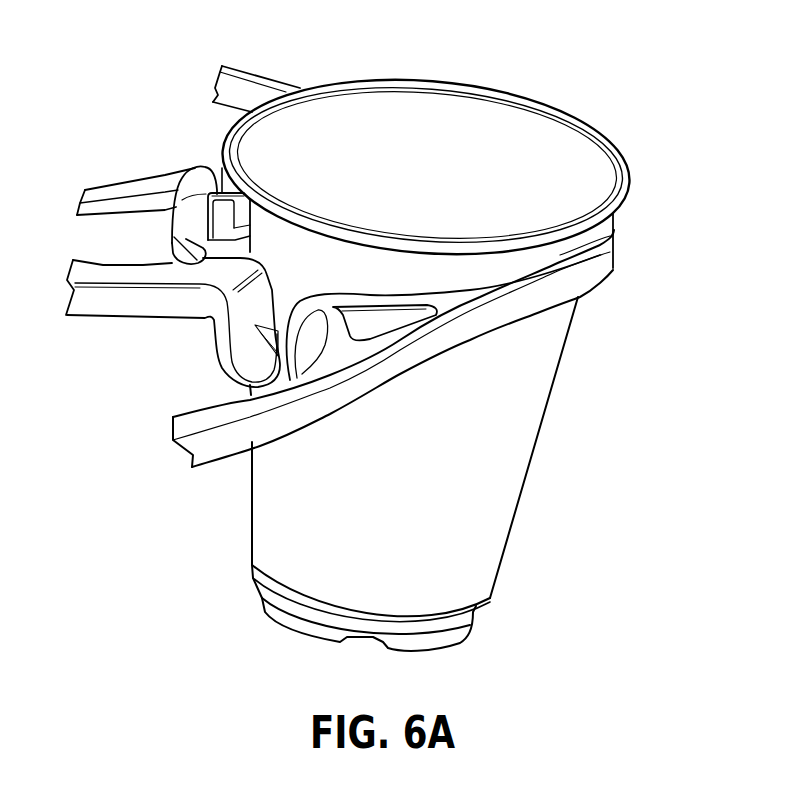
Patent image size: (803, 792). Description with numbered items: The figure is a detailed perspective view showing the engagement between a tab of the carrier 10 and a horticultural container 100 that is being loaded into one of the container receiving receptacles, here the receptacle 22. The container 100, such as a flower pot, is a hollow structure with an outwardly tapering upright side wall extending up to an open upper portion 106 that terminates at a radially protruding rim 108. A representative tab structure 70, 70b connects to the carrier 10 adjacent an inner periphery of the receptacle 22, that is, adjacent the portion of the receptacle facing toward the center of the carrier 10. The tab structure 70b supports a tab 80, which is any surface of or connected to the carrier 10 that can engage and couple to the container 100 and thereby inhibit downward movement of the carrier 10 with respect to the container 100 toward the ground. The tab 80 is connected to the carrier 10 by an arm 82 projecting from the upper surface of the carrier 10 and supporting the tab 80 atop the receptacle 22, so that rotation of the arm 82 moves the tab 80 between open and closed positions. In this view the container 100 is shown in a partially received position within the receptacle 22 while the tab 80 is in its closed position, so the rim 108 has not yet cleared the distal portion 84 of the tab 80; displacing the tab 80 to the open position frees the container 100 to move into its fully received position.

The carrier 10 is at (115, 186).
The receptacle 22 is at (477, 228).
The tab structure 70 is at (163, 155).
The tab structure 70b is at (201, 168).
The tab 80 is at (233, 190).
The arm 82 is at (195, 224).
The distal portion 84 is at (225, 193).
The horticultural container 100 is at (528, 478).
The open upper portion 106 is at (557, 257).
The rim 108 is at (615, 167).